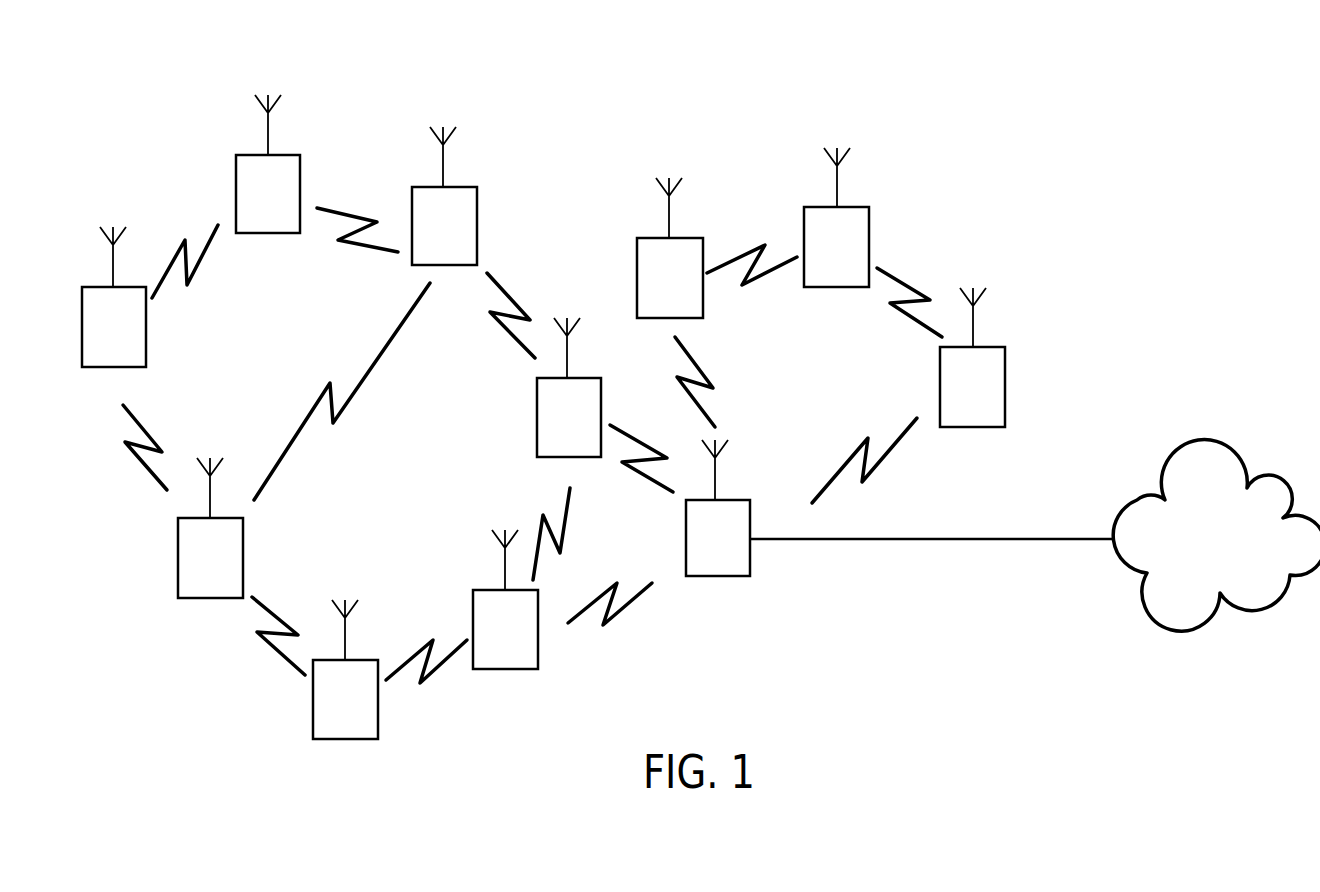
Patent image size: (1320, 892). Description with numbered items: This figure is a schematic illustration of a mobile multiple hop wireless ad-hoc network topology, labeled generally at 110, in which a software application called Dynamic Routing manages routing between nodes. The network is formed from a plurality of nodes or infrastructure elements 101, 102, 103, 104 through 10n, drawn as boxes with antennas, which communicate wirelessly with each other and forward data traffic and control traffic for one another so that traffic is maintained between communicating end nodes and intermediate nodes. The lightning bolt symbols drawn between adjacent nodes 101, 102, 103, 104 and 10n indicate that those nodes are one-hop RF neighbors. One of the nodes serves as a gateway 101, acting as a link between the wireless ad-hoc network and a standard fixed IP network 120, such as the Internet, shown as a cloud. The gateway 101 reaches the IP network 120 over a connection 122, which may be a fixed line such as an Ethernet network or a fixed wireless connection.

The wireless mesh network 110 is at (501, 134).
The node 10n is at (343, 739).
The gateway 101 is at (718, 577).
The node 102 is at (645, 238).
The node 103 is at (814, 207).
The node 104 is at (995, 347).
The standard fixed IP network 120 is at (1232, 580).
The connection 122 is at (932, 539).